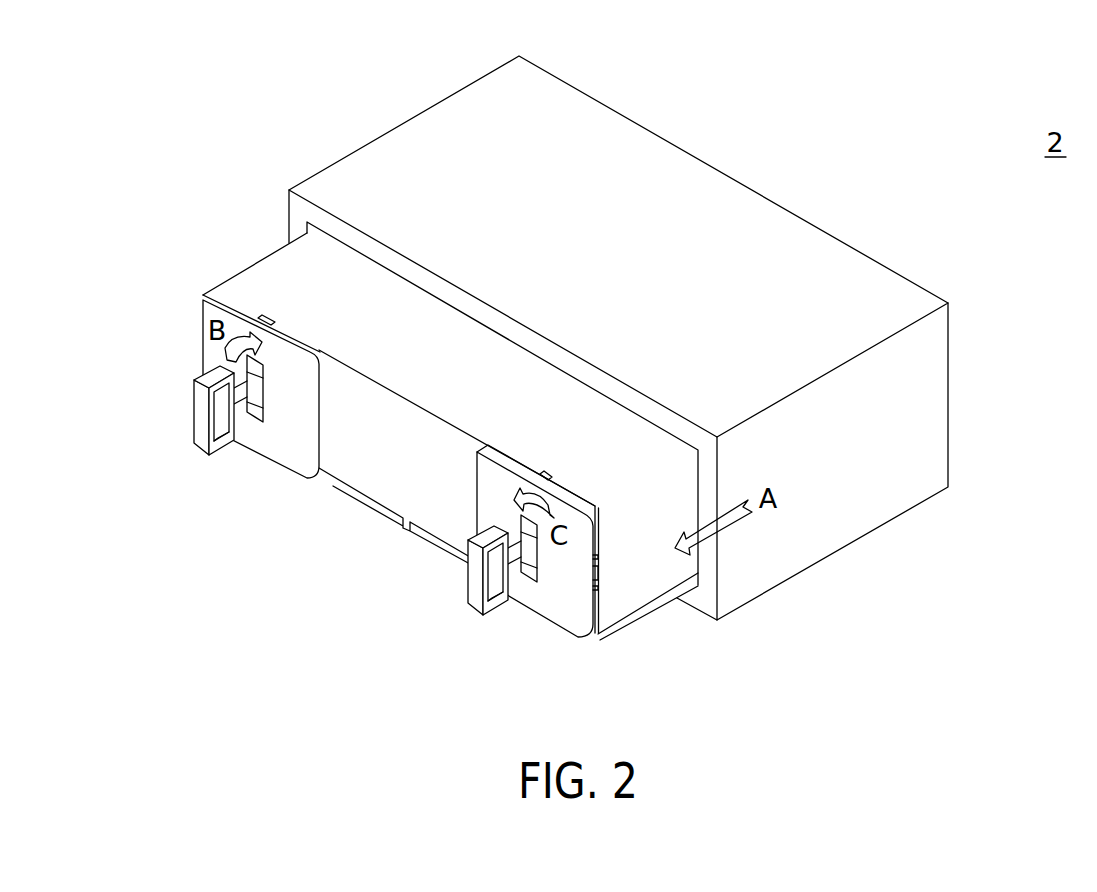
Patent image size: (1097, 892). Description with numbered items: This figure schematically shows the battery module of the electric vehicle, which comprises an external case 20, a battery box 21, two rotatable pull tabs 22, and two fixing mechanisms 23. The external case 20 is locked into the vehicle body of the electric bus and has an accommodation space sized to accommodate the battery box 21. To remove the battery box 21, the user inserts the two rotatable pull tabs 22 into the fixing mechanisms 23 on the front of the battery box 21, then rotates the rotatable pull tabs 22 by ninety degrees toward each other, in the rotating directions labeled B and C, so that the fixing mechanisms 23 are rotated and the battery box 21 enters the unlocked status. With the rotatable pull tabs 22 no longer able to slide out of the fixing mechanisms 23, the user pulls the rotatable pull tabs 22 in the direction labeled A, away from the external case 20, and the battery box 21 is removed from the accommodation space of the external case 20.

The external case 20 is at (608, 148).
The battery box 21 is at (283, 267).
The rotatable pull tab 22 is at (190, 440).
The fixing mechanism 23 is at (200, 302).